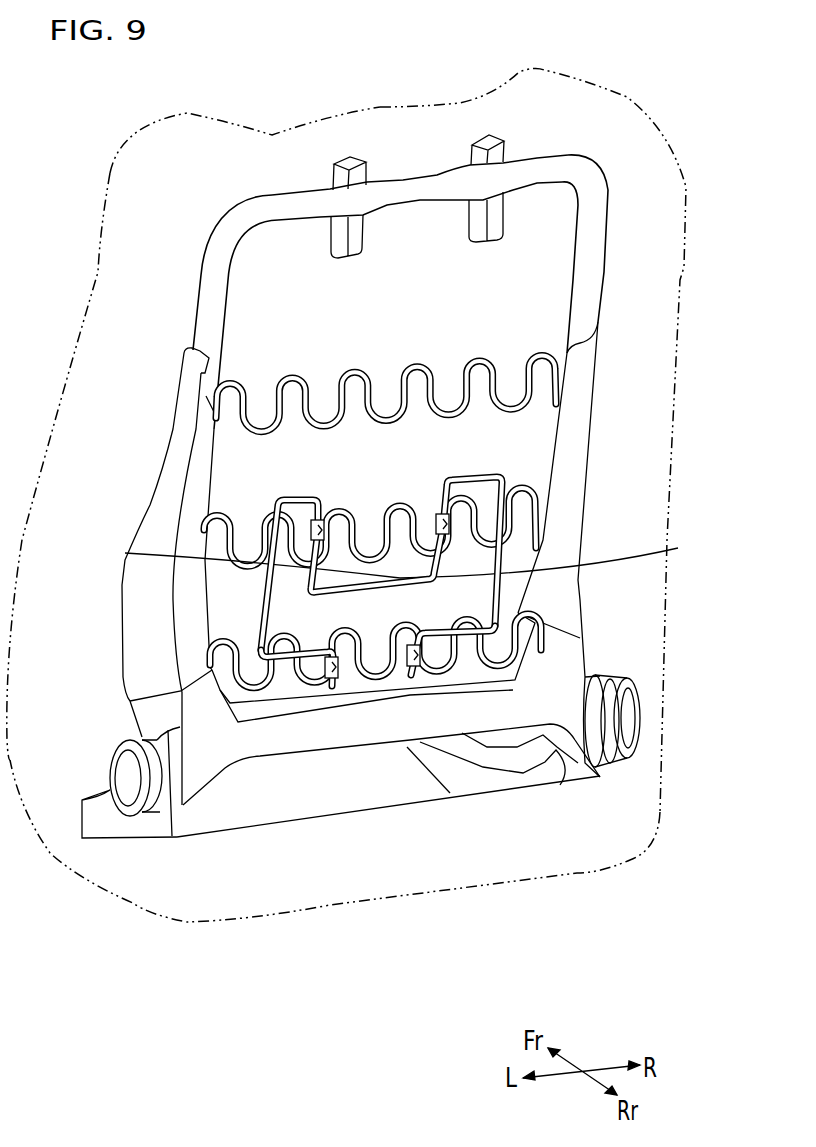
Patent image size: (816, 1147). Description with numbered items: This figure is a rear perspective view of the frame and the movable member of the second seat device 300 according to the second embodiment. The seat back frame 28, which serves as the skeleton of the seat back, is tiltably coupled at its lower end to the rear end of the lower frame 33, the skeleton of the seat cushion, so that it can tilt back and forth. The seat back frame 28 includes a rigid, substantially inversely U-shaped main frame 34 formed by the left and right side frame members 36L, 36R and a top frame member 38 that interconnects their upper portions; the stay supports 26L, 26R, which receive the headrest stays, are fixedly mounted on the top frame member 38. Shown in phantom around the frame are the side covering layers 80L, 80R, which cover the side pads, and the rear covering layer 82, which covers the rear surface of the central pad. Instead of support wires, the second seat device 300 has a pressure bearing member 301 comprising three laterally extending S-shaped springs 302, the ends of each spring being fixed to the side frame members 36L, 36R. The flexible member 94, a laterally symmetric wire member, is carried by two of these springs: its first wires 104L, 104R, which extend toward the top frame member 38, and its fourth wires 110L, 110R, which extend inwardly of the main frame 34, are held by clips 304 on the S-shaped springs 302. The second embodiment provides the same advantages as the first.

The second seat device 300 is at (297, 59).
The left side covering layer 80L is at (110, 175).
The right side covering layer 80R is at (562, 75).
The rear covering layer 82 is at (580, 878).
The main frame 34 is at (567, 148).
The top frame member 38 is at (275, 205).
The seat back frame 28 is at (606, 158).
The left stay support 26L is at (348, 160).
The right stay support 26R is at (487, 137).
The left side frame member 36L is at (135, 627).
The right side frame member 36R is at (572, 622).
The lower frame 33 is at (95, 808).
The pressure bearing member 301 is at (492, 350).
The S-shaped spring 302 is at (358, 370).
The flexible member 94 is at (482, 474).
The clip 304 is at (320, 520).
The left first wire 104L is at (237, 557).
The right first wire 104R is at (565, 555).
The left fourth wire 110L is at (310, 663).
The right fourth wire 110R is at (438, 637).